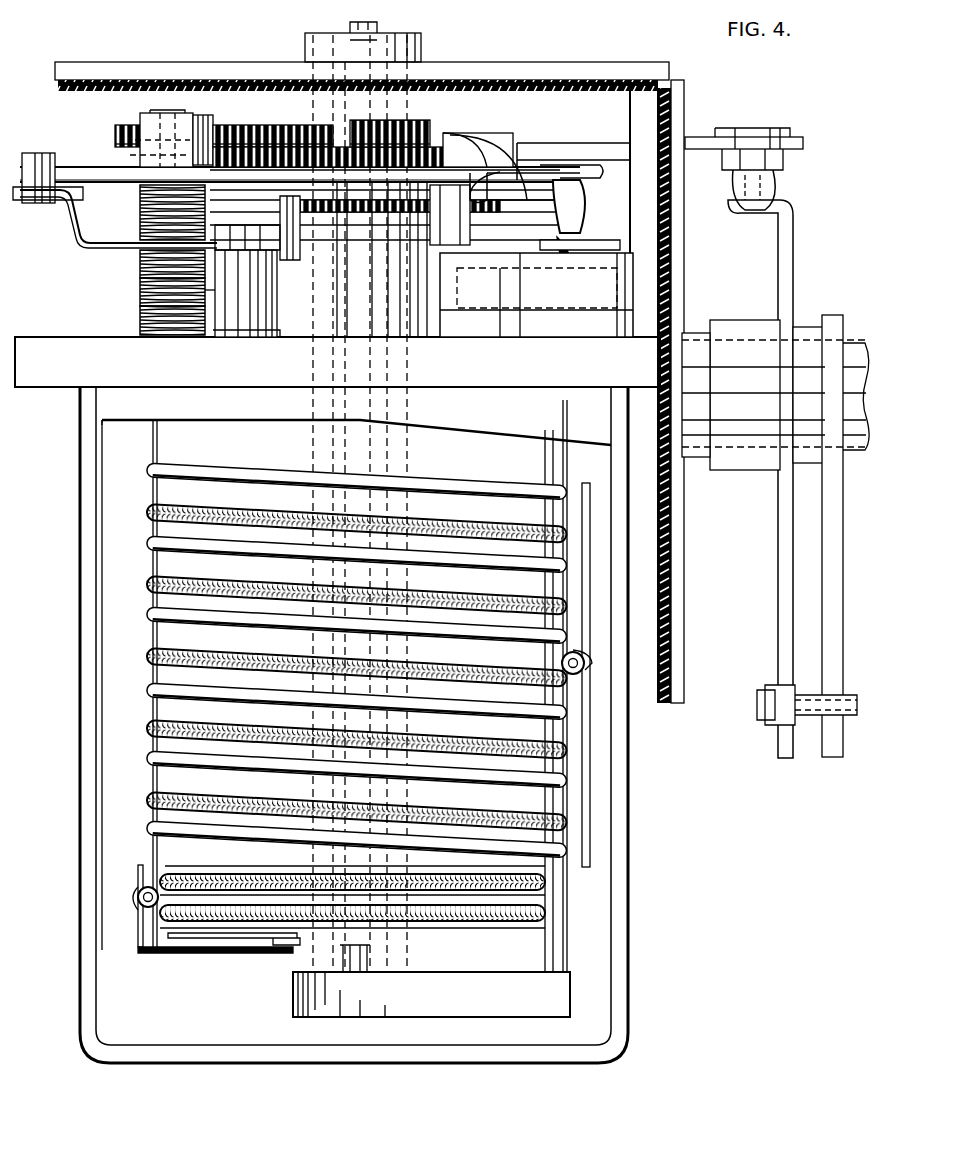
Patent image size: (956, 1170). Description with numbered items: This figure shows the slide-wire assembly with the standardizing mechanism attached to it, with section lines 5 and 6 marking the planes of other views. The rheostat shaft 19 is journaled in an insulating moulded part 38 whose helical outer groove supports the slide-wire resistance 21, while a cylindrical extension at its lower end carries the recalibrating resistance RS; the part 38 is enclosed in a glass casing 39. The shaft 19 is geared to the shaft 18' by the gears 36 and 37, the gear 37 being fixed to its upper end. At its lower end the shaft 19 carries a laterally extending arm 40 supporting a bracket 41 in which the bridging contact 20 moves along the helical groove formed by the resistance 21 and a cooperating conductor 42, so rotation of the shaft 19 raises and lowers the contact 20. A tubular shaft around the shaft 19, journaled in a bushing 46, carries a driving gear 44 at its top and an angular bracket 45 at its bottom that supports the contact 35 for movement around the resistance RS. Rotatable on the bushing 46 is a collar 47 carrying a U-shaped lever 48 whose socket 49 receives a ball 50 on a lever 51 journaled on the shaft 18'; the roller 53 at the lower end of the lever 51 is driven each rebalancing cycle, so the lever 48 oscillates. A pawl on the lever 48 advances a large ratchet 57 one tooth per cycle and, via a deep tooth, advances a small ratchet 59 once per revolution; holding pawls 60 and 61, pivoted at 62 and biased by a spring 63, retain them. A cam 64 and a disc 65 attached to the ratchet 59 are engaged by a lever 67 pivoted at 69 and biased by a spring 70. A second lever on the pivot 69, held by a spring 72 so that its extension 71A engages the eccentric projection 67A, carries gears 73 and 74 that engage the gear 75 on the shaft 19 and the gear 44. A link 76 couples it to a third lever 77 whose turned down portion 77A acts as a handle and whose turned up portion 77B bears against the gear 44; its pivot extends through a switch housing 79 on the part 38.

The section line 5- 5 is at (100, 93).
The section line 6- 6 is at (310, 7).
The shaft 18' is at (775, 520).
The rheostat shaft 19 is at (342, 964).
The bridging contact 20 is at (588, 668).
The slide-wire resistance 21 is at (150, 720).
The contact 35 is at (150, 885).
The gear 36 is at (672, 655).
The gear 37 is at (636, 74).
The part 38 is at (155, 450).
The casing 39 is at (617, 954).
The arm 40 is at (476, 1003).
The bracket 41 is at (581, 805).
The cooperating conductor 42 is at (150, 610).
The driving gear 44 is at (430, 155).
The angular bracket 45 is at (195, 946).
The bushing 46 is at (313, 370).
The collar 47 is at (296, 313).
The lever 48 is at (568, 143).
The socket 49 is at (724, 134).
The ball 50 is at (745, 175).
The lever 51 is at (790, 272).
The roller 53 is at (760, 690).
The large ratchet 57 is at (536, 293).
The small ratchet 59 is at (470, 150).
The holding pawl 60 is at (140, 265).
The holding pawl 61 is at (262, 158).
The pivot 62 is at (140, 315).
The spring 63 is at (222, 130).
The cam 64 is at (300, 225).
The disc 65 is at (303, 138).
The lever 67 is at (82, 247).
The projection 67A is at (38, 150).
The pivot 69 is at (168, 112).
The spring 70 is at (140, 290).
The extension 71A is at (78, 160).
The spring 72 is at (140, 210).
The gear 73 is at (118, 128).
The gear 74 is at (146, 153).
The gear 75 is at (395, 140).
The link 76 is at (596, 175).
The lever 77 is at (590, 165).
The turned down portion 77A is at (580, 210).
The turned up portion 77B is at (490, 152).
The switch housing 79 is at (606, 250).
The recalibrating resistance RS is at (542, 918).